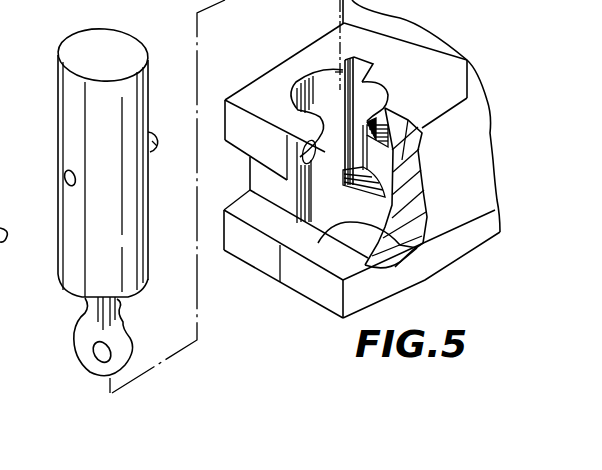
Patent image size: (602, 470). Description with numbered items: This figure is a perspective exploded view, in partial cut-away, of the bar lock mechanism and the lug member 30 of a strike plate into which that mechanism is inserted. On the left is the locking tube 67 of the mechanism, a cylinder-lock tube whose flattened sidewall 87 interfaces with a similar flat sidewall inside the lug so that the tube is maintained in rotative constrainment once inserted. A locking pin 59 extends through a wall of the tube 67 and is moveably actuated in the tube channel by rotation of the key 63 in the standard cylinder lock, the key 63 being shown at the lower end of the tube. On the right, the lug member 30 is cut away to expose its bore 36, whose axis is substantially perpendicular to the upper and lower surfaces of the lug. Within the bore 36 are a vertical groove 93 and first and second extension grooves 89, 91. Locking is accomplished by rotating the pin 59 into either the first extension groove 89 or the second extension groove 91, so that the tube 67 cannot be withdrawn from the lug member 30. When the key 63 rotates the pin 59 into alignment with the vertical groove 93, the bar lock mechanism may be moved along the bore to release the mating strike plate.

The flattened sidewall 87 is at (63, 80).
The locking tube 67 is at (134, 85).
The locking pin 59 is at (155, 133).
The key 63 is at (120, 345).
The vertical groove 93 is at (358, 90).
The second extension groove 91 is at (397, 130).
The first extension groove 89 is at (383, 180).
The bore 36 is at (377, 243).
The lug member 30 is at (475, 212).